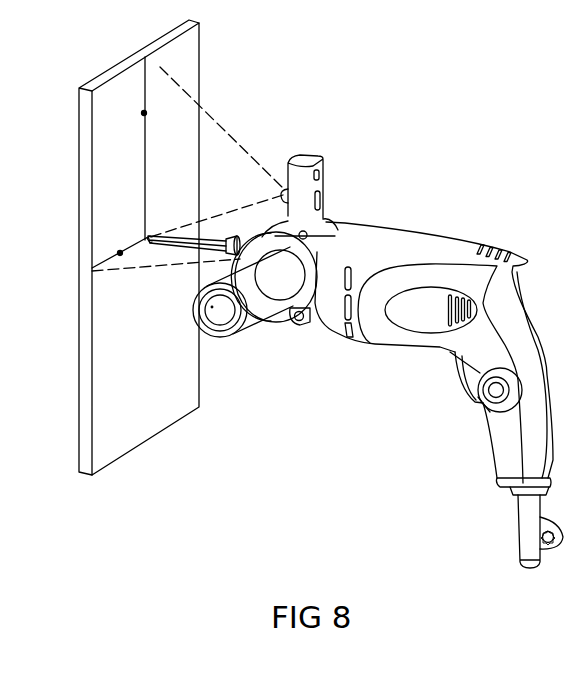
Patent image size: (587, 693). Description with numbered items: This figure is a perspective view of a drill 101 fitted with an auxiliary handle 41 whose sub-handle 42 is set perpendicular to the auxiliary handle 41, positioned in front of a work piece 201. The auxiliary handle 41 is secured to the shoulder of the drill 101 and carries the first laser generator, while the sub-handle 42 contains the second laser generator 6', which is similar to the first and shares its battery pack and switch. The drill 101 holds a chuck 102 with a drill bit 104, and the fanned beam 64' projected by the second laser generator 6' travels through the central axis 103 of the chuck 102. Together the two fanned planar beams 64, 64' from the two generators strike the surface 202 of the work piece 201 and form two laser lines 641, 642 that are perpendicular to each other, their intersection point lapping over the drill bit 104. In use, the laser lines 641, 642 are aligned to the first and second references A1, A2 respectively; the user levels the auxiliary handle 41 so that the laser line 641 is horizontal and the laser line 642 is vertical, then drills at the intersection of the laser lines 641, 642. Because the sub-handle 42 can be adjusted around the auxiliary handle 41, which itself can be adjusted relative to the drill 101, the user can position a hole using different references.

The drill 101 is at (410, 250).
The chuck 102 is at (233, 230).
The drilling axis 103 is at (192, 245).
The drill bit 104 is at (163, 230).
The auxiliary handle 41 is at (257, 307).
The sub-handle 42 is at (302, 190).
The second laser generator 6' is at (216, 175).
The fanned beam 64 is at (166, 296).
The fanned beam 64' is at (221, 127).
The laser line 641 is at (102, 262).
The laser line 642 is at (145, 150).
The work piece 201 is at (87, 312).
The surface 202 is at (145, 410).
The first reference A1 is at (113, 244).
The second reference A2 is at (135, 114).